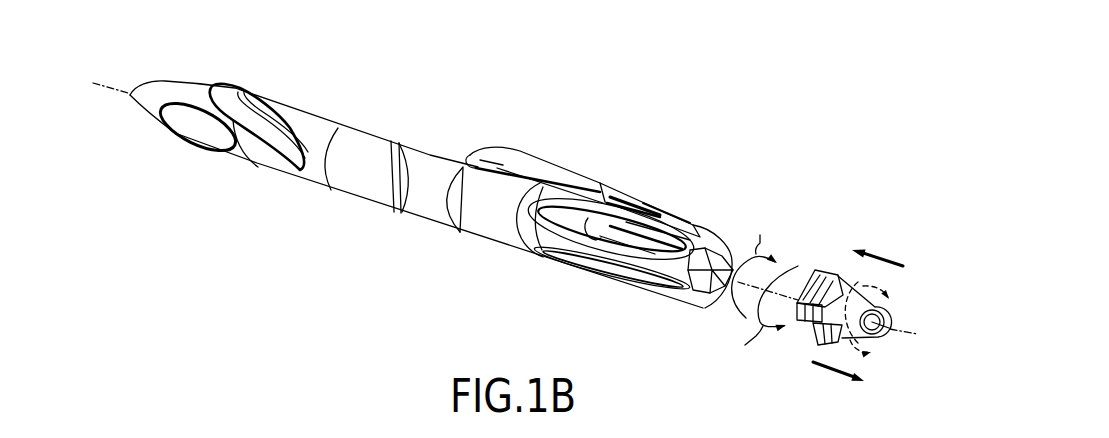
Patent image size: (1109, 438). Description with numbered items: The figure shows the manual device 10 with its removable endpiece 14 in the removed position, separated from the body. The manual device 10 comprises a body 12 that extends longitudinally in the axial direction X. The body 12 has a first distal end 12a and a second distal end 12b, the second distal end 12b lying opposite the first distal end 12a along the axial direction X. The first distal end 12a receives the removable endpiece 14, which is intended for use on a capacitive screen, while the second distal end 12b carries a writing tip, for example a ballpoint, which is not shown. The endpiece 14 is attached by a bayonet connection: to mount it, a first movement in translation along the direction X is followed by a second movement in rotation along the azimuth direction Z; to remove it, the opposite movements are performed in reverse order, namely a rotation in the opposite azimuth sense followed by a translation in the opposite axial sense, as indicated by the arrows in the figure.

The manual device 10 is at (613, 87).
The body 12 is at (367, 200).
The first distal end 12a is at (708, 236).
The second distal end 12b is at (150, 116).
The removable endpiece 14 is at (829, 260).